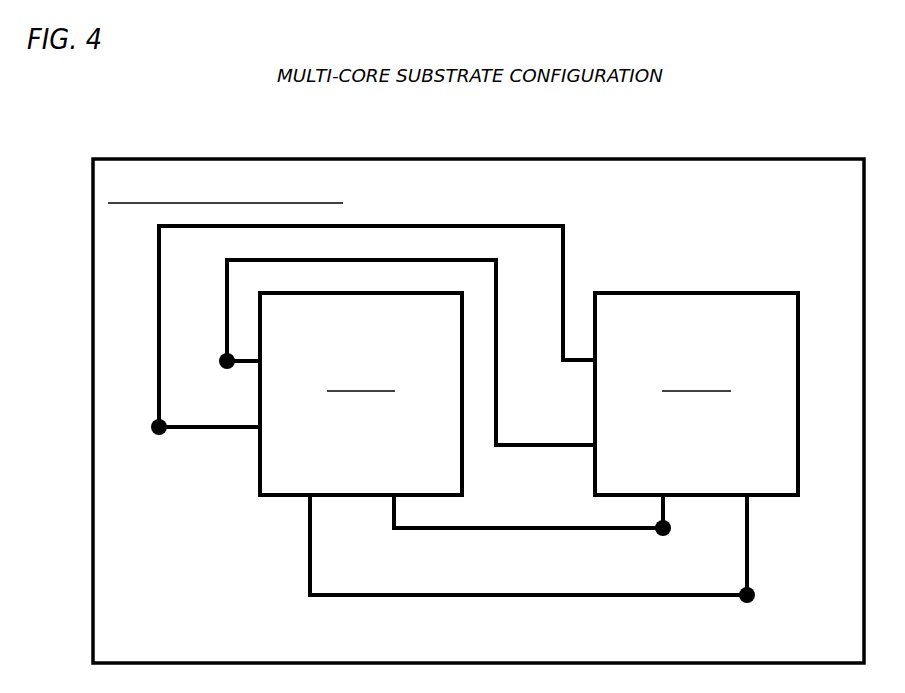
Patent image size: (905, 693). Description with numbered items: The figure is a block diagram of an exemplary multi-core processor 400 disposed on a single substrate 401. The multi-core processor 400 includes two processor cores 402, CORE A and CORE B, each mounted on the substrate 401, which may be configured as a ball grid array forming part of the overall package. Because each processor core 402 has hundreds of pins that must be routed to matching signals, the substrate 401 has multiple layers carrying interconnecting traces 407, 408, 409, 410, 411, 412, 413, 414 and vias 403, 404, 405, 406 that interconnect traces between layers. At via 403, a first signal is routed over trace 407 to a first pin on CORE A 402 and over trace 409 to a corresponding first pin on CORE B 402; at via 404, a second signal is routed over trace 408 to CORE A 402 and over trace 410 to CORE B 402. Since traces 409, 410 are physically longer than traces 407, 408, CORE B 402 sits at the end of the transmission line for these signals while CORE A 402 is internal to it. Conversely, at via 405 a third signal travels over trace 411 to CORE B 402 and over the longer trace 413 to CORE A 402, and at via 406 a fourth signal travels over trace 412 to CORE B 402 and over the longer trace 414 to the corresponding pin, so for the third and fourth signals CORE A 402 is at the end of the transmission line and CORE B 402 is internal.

The multi-core processor 400 is at (821, 110).
The substrate 401 is at (812, 203).
The processor core 402 is at (375, 417).
The via 403 is at (225, 353).
The via 404 is at (159, 437).
The via 405 is at (660, 537).
The via 406 is at (745, 603).
The trace 407 is at (243, 366).
The trace 408 is at (236, 431).
The trace 409 is at (393, 258).
The trace 410 is at (497, 224).
The trace 411 is at (665, 505).
The trace 412 is at (749, 540).
The trace 413 is at (563, 532).
The trace 414 is at (512, 598).